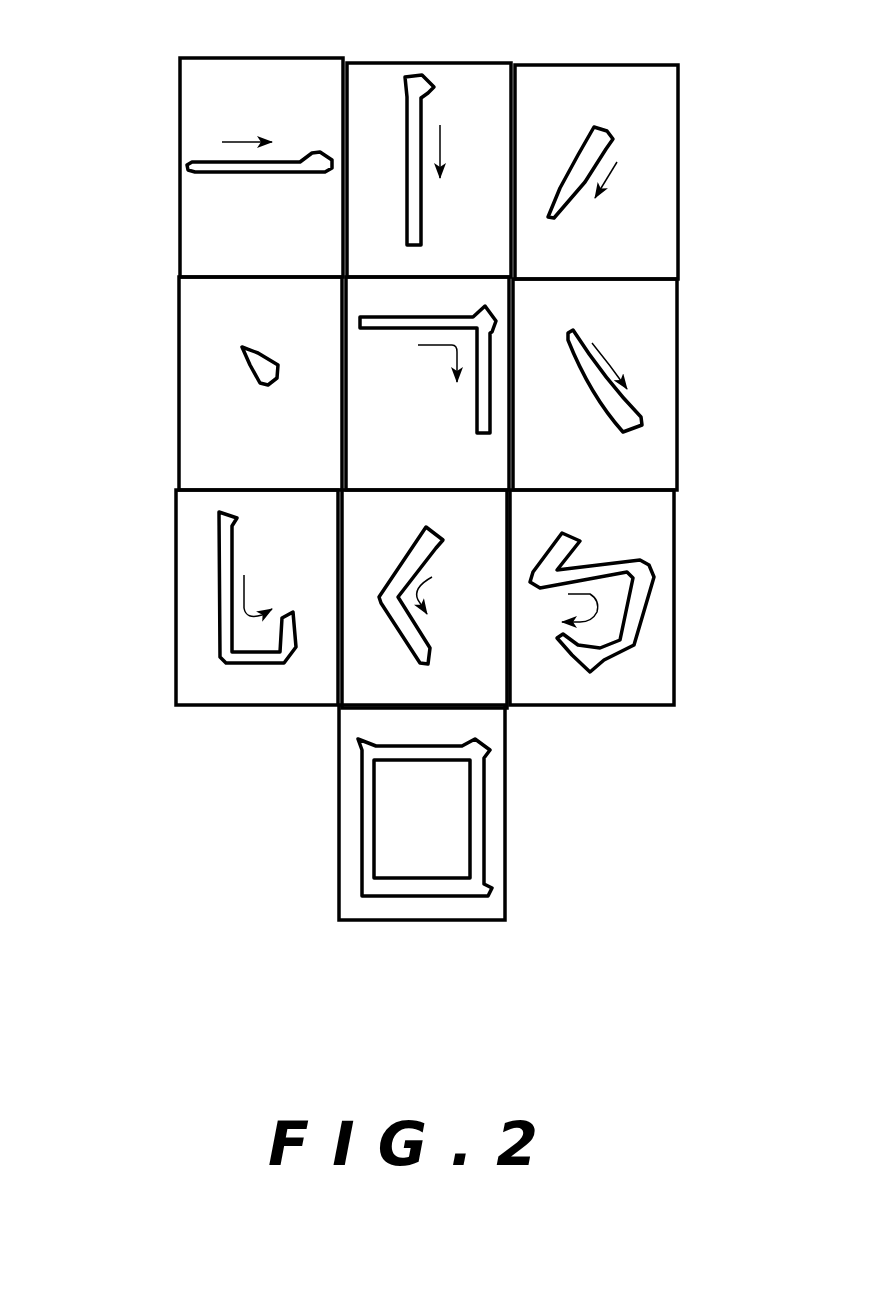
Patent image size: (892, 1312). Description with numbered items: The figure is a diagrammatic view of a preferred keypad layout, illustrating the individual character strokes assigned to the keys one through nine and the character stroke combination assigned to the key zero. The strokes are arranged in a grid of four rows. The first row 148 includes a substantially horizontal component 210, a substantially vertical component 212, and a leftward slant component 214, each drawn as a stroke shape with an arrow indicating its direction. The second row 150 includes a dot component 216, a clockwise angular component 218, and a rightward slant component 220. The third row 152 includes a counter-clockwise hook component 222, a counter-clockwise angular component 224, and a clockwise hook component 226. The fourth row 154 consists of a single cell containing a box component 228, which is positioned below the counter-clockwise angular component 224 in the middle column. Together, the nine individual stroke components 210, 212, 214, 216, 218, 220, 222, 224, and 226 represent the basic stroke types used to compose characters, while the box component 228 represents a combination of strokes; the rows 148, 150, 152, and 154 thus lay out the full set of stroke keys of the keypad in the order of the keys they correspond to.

The first row 148 is at (429, 140).
The second row 150 is at (430, 383).
The third row 152 is at (425, 624).
The fourth row 154 is at (415, 812).
The substantially horizontal component 210 is at (195, 95).
The substantially vertical component 212 is at (480, 75).
The leftward slant component 214 is at (668, 168).
The dot component 216 is at (193, 304).
The clockwise angular component 218 is at (360, 453).
The rightward slant component 220 is at (665, 382).
The counter-clockwise hook component 222 is at (190, 530).
The counter-clockwise angular component 224 is at (363, 693).
The clockwise hook component 226 is at (663, 605).
The box component 228 is at (495, 824).